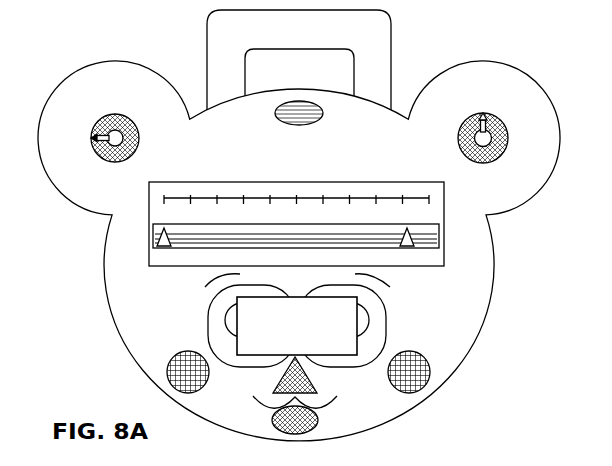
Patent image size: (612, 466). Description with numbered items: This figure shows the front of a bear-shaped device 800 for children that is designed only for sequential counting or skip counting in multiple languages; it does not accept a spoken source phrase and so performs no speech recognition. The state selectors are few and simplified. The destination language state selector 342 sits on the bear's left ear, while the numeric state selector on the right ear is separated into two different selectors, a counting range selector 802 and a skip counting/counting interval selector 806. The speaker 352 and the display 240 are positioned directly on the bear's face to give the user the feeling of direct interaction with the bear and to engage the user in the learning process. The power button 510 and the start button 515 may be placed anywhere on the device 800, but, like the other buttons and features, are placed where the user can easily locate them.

The device 800 is at (139, 25).
The destination language state selector 342 is at (98, 122).
The counting range selector 802 is at (506, 122).
The power button 510 is at (276, 114).
The skip counting/counting interval selector 806 is at (164, 257).
The display 240 is at (357, 318).
The speaker 352 is at (431, 367).
The start button 515 is at (318, 418).